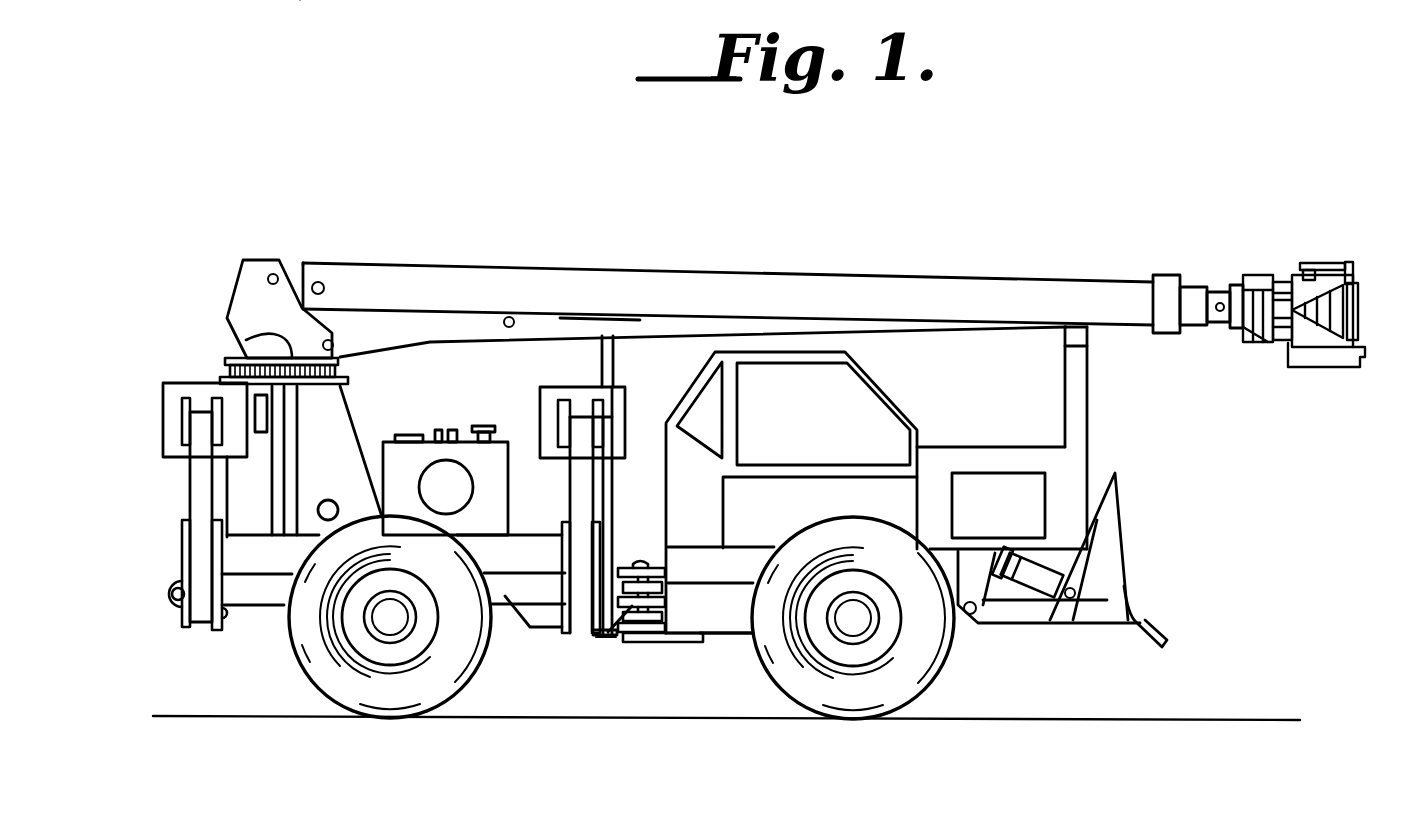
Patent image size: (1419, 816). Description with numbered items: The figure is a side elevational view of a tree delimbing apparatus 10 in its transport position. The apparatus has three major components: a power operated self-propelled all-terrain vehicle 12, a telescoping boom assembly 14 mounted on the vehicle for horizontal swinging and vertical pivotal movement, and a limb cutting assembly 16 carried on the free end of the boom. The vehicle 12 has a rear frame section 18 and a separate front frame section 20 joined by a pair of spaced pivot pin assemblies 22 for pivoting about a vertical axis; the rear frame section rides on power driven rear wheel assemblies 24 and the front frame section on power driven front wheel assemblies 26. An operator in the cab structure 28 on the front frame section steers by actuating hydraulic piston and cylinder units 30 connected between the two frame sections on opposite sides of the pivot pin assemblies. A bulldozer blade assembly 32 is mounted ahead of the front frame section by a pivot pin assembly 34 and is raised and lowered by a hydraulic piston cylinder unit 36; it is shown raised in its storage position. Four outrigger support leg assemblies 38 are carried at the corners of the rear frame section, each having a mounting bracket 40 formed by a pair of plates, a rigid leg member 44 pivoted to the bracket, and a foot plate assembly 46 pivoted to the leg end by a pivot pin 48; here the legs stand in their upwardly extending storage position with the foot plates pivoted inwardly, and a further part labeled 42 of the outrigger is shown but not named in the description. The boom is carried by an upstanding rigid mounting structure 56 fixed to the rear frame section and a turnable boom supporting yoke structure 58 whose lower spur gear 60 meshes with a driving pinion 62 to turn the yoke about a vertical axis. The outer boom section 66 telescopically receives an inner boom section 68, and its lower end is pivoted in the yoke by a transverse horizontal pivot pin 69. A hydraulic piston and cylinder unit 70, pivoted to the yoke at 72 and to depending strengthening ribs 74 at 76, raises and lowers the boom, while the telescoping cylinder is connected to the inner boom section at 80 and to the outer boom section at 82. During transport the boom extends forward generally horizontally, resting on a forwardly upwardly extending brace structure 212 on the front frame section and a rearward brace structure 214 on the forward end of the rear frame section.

The tree delimbing apparatus 10 is at (888, 250).
The power operated self-propelled all-terrain vehicle 12 is at (1098, 463).
The telescoping boom assembly 14 is at (1032, 278).
The limb cutting assembly 16 is at (1360, 275).
The rear frame section 18 is at (505, 596).
The front frame section 20 is at (733, 638).
The pivot pin assemblies 22 is at (642, 562).
The rear wheel assemblies 24 is at (310, 641).
The front wheel assemblies 26 is at (935, 688).
The cab structure 28 is at (905, 407).
The hydraulic piston and cylinder units 30 is at (605, 633).
The bulldozer blade assembly 32 is at (1130, 595).
The pivot pin assembly 34 is at (975, 617).
The hydraulic piston cylinder unit 36 is at (1040, 576).
The outrigger support leg assemblies 38 is at (163, 428).
The mounting bracket 40 is at (182, 558).
The roller 42 is at (173, 613).
The rigid leg member 44 is at (200, 508).
The foot plate assembly 46 is at (163, 394).
The pivot pin 48 is at (182, 442).
The upstanding rigid mounting structure 56 is at (340, 410).
The turnable boom supporting yoke structure 58 is at (262, 296).
The spur gear 60 is at (262, 338).
The driving pinion 62 is at (225, 372).
The outer boom section 66 is at (455, 280).
The inner boom section 68 is at (1222, 288).
The transverse horizontal pivot pin 69 is at (268, 277).
The hydraulic piston and cylinder unit 70 is at (430, 344).
The pivot connection to yoke structure 72 is at (333, 332).
The depending strengthening ribs 74 is at (607, 330).
The pivot connection to strengthening ribs 76 is at (510, 318).
The connection to inner boom section 80 is at (1222, 312).
The connection to outer boom section 82 is at (325, 286).
The forwardly upwardly extending brace structure 212 is at (1088, 397).
The rearward brace structure 214 is at (615, 358).